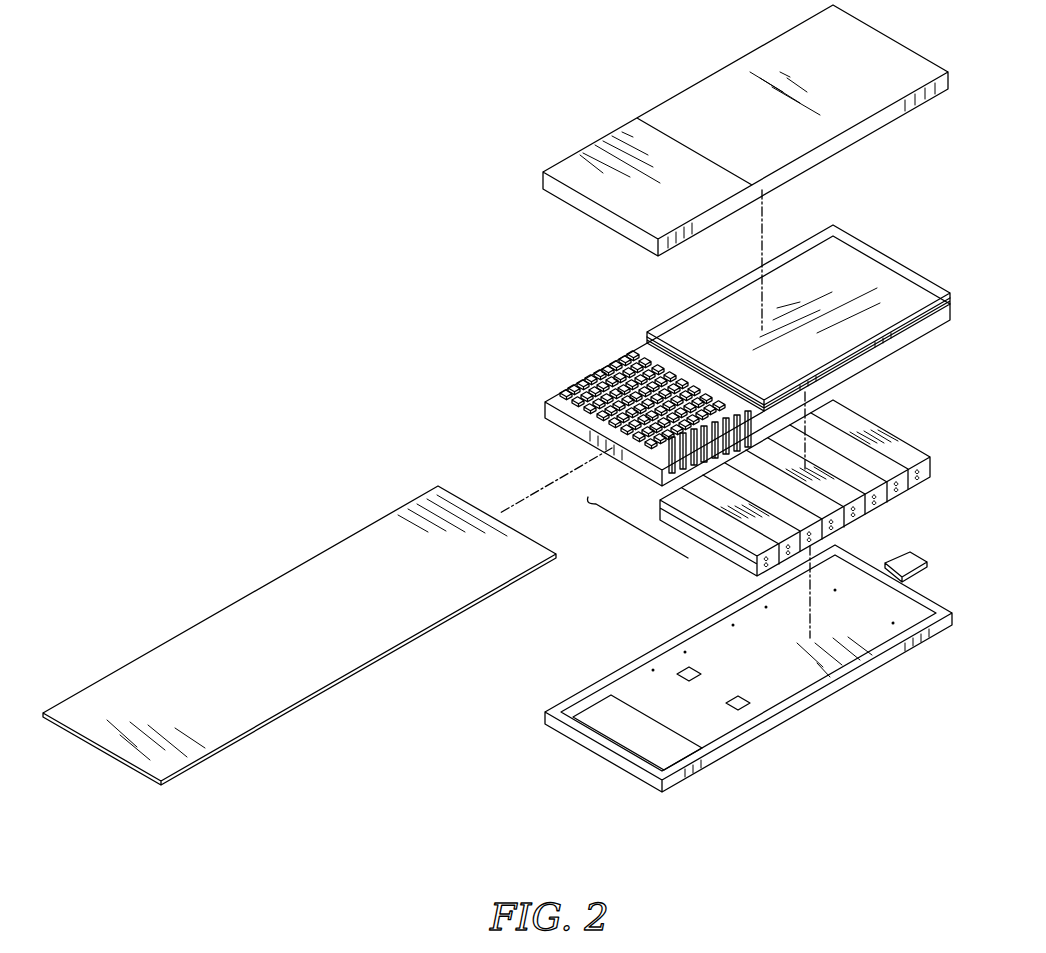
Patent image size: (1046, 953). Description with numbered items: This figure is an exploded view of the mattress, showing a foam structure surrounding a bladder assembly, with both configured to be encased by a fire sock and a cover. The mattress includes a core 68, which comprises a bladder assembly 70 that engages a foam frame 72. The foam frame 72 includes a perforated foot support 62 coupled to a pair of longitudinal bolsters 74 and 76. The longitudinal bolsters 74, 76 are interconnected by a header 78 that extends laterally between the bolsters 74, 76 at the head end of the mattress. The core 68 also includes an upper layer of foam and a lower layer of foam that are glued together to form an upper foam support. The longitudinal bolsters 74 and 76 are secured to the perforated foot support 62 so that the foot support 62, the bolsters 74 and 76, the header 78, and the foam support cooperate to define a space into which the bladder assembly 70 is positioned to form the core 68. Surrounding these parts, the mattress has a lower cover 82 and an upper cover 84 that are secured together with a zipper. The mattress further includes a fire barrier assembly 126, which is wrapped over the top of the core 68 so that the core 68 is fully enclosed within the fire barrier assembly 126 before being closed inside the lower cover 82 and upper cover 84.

The upper cover 84 is at (552, 164).
The foam frame 72 is at (709, 330).
The longitudinal bolster 74 is at (810, 240).
The header 78 is at (922, 293).
The longitudinal bolster 76 is at (938, 323).
The perforated foot support 62 is at (545, 411).
The bladder assembly 70 is at (875, 414).
The core 68 is at (633, 530).
The lower cover 82 is at (733, 749).
The fire barrier assembly 126 is at (227, 720).